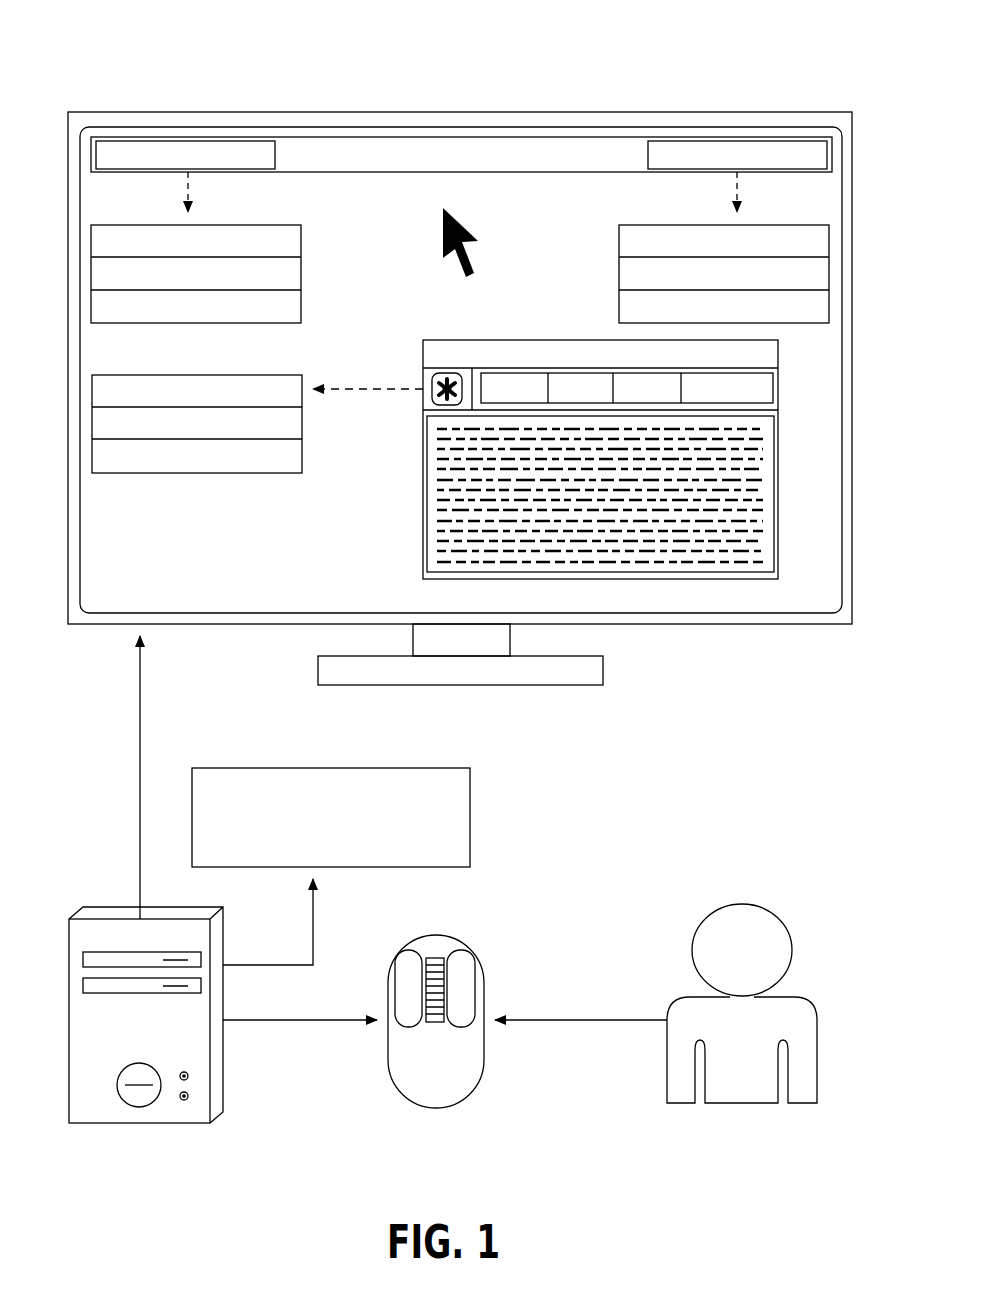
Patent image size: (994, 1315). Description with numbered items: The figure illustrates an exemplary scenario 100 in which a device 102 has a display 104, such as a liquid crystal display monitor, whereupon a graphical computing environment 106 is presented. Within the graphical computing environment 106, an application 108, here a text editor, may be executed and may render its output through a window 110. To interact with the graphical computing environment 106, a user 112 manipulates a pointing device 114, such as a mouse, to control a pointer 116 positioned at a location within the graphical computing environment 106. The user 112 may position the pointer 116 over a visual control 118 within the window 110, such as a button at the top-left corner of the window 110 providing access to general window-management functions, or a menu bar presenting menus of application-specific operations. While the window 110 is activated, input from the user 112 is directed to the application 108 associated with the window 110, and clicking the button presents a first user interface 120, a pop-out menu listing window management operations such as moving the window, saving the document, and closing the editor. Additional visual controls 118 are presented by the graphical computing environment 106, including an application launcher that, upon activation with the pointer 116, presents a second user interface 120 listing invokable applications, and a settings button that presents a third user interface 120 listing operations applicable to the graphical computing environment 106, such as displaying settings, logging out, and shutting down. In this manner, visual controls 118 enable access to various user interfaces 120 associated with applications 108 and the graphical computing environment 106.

The exemplary scenario 100 is at (145, 52).
The device 102 is at (116, 907).
The display 104 is at (137, 112).
The graphical computing environment 106 is at (238, 128).
The application 108 is at (258, 768).
The window 110 is at (483, 340).
The user 112 is at (744, 905).
The pointing device 114 is at (437, 935).
The pointer 116 is at (465, 228).
The visual control 118 is at (278, 162).
The user interface 120 is at (158, 224).